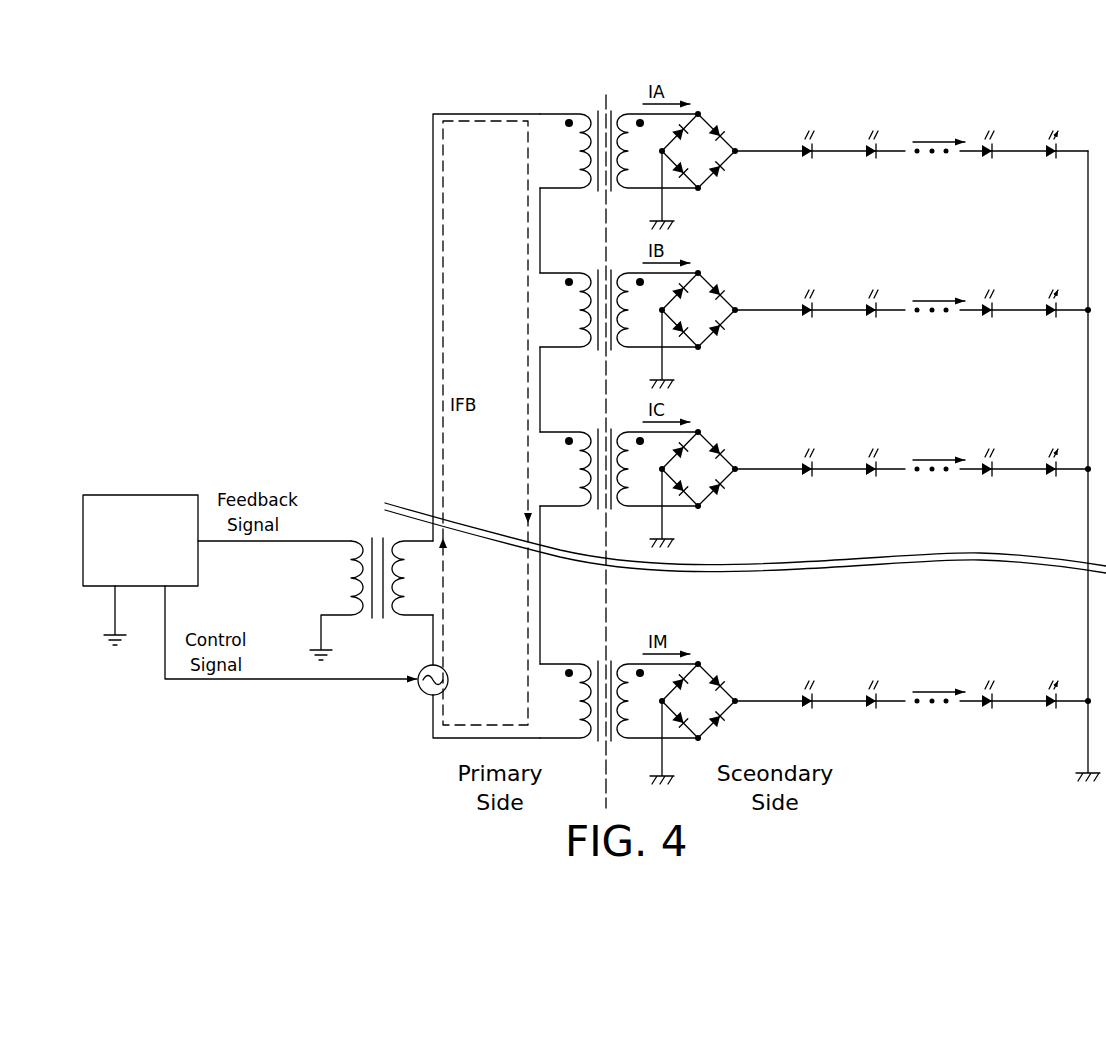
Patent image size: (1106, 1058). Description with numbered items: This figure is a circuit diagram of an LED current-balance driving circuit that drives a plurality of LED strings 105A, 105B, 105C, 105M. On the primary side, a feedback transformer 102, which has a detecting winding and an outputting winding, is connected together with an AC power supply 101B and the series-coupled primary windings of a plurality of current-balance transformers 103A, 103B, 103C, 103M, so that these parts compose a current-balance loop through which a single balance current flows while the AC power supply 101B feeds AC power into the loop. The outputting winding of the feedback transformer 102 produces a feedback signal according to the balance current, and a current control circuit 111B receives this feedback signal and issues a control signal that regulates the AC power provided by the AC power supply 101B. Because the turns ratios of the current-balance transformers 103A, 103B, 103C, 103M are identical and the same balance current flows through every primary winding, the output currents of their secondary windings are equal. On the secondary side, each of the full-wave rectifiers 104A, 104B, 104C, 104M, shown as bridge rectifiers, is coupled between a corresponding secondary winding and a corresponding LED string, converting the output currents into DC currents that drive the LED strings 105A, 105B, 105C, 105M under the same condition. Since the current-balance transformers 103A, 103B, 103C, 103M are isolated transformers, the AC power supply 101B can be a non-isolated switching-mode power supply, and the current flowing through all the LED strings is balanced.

The current control circuit 111B is at (141, 490).
The feedback transformer 102 is at (381, 535).
The AC power supply 101B is at (420, 698).
The current-balance transformer 103A is at (606, 107).
The current-balance transformer 103B is at (606, 266).
The current-balance transformer 103C is at (606, 425).
The current-balance transformer 103M is at (606, 657).
The full-wave rectifier 104A is at (788, 186).
The full-wave rectifier 104B is at (788, 345).
The full-wave rectifier 104C is at (788, 504).
The full-wave rectifier 104M is at (788, 736).
The LED string 105A is at (985, 187).
The LED string 105B is at (985, 346).
The LED string 105C is at (985, 505).
The LED string 105M is at (985, 737).